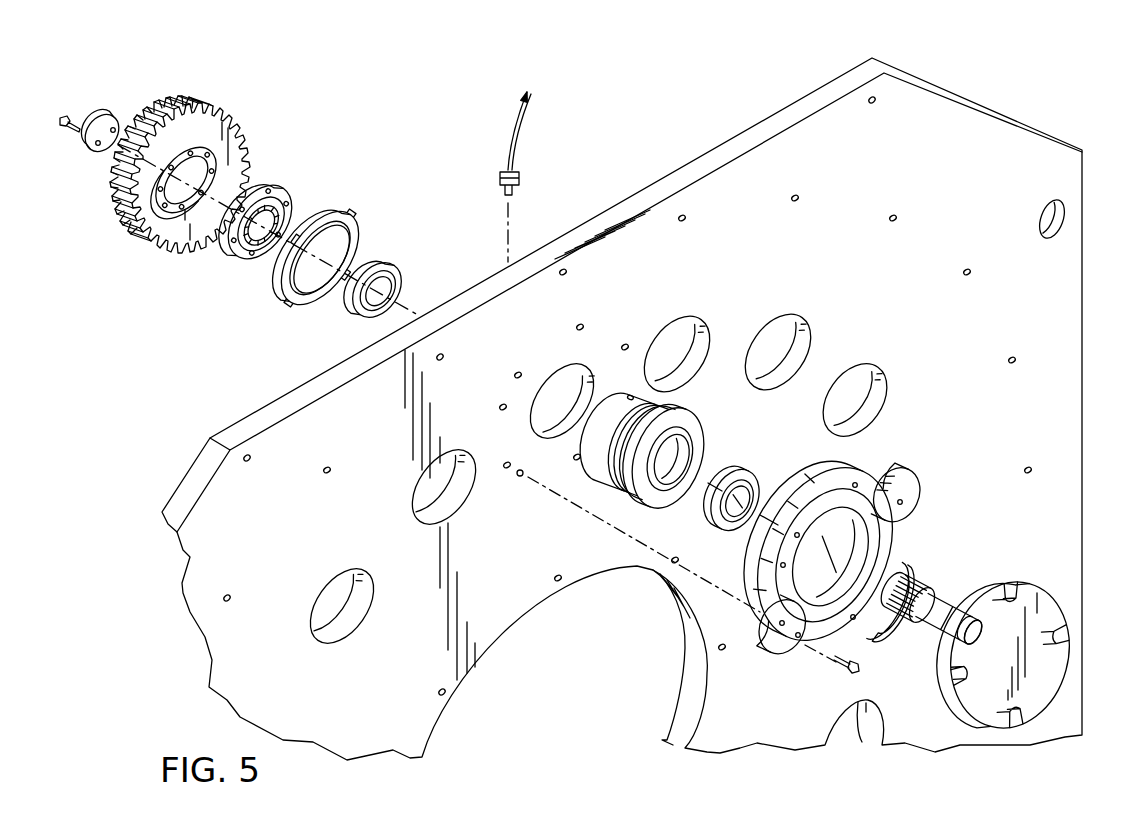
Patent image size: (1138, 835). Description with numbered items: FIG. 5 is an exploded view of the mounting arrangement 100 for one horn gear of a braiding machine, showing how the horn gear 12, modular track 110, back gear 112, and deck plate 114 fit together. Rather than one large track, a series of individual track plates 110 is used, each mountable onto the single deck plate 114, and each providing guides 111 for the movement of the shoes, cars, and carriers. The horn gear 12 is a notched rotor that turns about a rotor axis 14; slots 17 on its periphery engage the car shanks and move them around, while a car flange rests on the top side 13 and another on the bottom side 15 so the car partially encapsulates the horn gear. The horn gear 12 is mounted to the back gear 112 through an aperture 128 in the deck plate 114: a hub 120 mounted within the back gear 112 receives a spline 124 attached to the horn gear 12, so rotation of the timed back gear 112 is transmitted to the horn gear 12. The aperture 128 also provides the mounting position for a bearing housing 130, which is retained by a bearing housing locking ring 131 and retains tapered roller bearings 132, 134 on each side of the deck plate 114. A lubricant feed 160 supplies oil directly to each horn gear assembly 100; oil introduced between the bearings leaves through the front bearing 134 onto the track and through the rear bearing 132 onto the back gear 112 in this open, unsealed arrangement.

The mounting arrangement 100 is at (617, 105).
The deck plate 114 is at (977, 133).
The back gear 112 is at (220, 113).
The hub 120 is at (273, 190).
The bearing housing locking ring 131 is at (330, 217).
The tapered roller bearing 132 is at (370, 270).
The lubricant feed 160 is at (512, 120).
The aperture 128 is at (560, 378).
The bearing housing 130 is at (663, 410).
The tapered roller bearing 134 is at (738, 475).
The modular track 110 is at (862, 465).
The guide 111 is at (890, 478).
The spline 124 is at (903, 622).
The rotor axis 14 is at (887, 587).
The bottom side 15 is at (973, 607).
The horn gear 12 is at (1052, 597).
The top side 13 is at (977, 707).
The slot 17 is at (1010, 590).